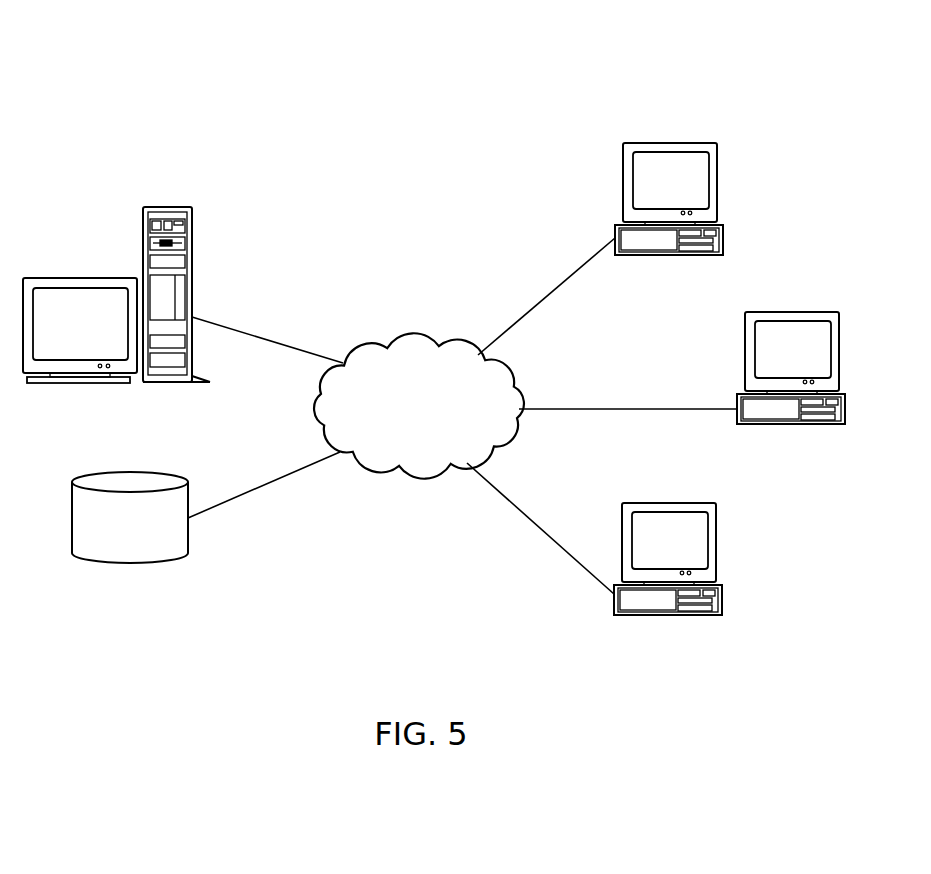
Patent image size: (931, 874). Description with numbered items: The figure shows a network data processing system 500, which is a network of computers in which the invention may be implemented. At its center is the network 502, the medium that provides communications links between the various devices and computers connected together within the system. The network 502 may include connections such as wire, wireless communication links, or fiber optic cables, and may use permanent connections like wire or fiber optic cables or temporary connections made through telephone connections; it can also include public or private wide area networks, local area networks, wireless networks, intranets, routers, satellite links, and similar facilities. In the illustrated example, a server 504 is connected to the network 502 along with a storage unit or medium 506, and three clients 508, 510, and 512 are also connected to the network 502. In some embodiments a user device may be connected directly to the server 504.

The network data processing system 500 is at (310, 92).
The network 502 is at (387, 468).
The server 504 is at (85, 276).
The storage unit 506 is at (132, 563).
The client 508 is at (713, 170).
The client 510 is at (797, 312).
The client 512 is at (715, 540).